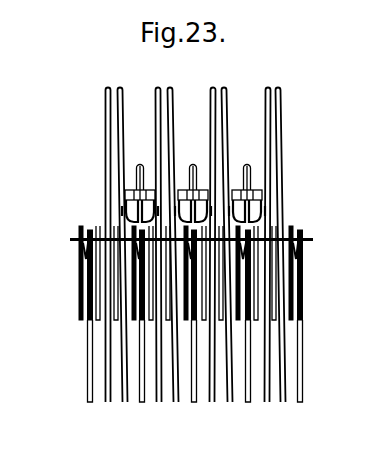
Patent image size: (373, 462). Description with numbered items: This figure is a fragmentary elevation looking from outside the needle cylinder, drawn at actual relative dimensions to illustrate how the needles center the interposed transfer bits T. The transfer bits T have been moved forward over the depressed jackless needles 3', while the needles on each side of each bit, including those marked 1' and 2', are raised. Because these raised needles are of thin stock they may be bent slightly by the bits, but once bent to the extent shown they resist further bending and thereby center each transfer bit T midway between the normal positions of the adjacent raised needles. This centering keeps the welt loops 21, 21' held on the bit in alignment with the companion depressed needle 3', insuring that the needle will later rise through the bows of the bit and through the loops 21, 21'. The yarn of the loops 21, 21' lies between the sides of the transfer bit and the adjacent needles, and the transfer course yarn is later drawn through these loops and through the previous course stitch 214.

The needle 1' is at (223, 224).
The needle 2' is at (188, 229).
The transfer bit T is at (252, 164).
The welt loop 21 is at (238, 193).
The welt loop 21' is at (239, 213).
The previous course stitch 214 is at (81, 250).
The jackless needle 3' is at (195, 339).